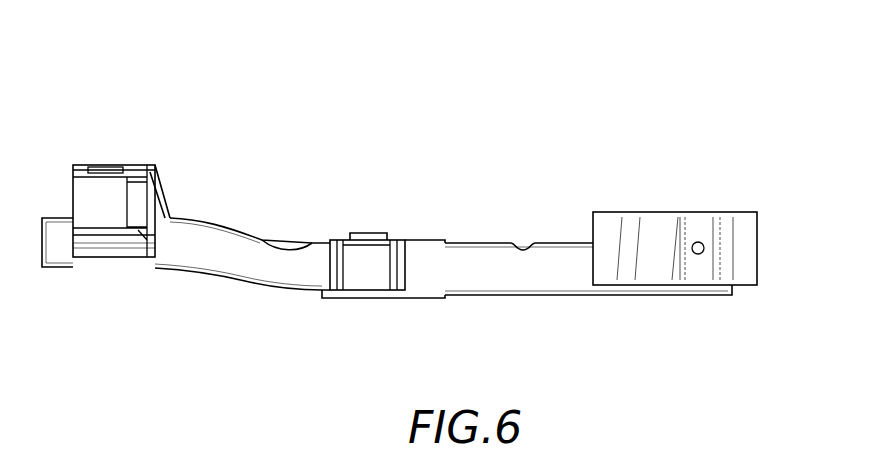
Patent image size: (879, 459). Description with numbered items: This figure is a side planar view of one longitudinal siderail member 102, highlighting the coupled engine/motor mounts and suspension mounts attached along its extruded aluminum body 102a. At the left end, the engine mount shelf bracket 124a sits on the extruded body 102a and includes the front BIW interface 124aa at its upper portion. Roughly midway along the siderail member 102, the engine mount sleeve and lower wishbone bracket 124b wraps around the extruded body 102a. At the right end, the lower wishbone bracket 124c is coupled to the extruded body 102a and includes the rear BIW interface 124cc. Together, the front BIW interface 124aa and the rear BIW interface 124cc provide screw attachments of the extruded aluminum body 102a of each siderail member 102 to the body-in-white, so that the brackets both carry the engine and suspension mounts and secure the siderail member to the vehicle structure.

The siderail member 102 is at (387, 213).
The extruded body 102a is at (500, 233).
The engine mount shelf bracket 124a is at (173, 142).
The front BIW interface 124aa is at (103, 158).
The engine mount sleeve and lower wishbone bracket 124b is at (402, 233).
The lower wishbone bracket 124c is at (717, 183).
The rear BIW interface 124cc is at (747, 205).